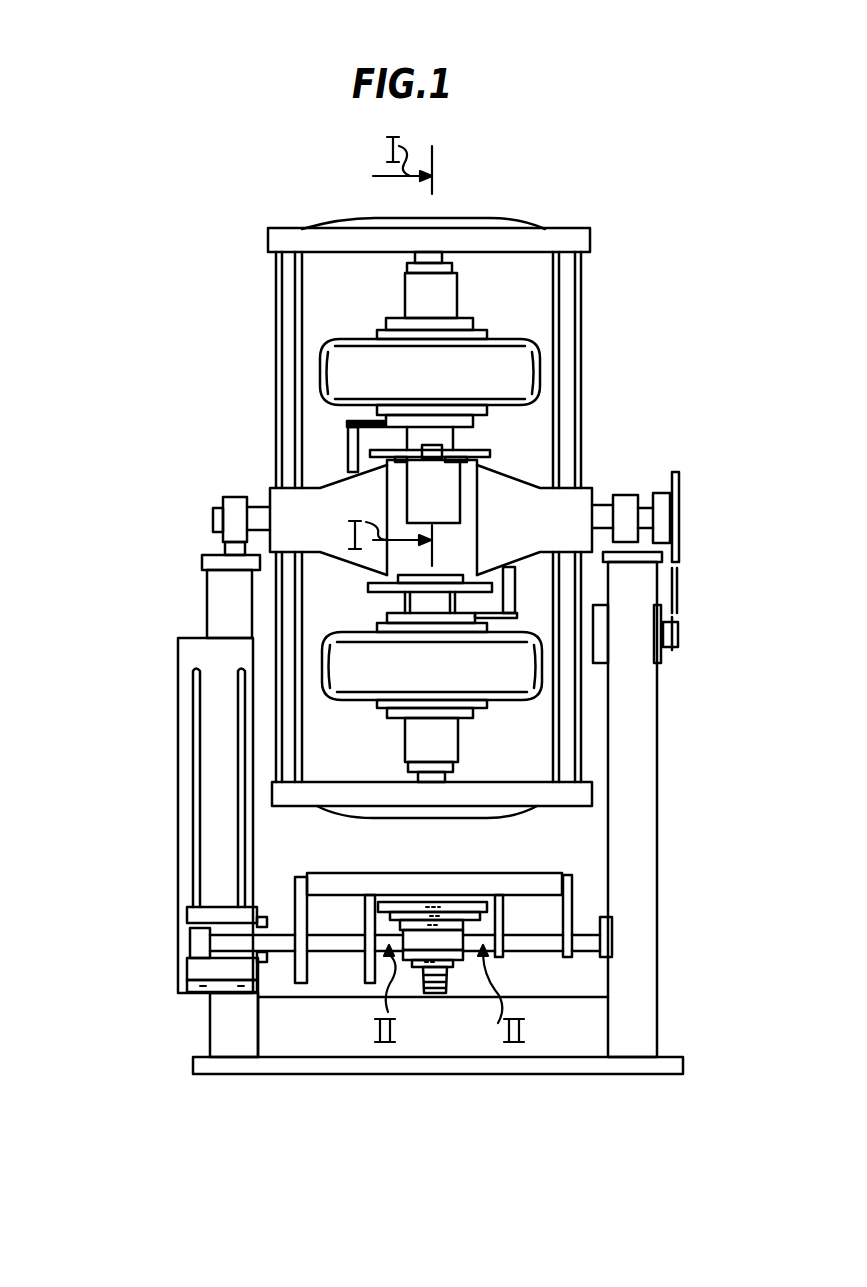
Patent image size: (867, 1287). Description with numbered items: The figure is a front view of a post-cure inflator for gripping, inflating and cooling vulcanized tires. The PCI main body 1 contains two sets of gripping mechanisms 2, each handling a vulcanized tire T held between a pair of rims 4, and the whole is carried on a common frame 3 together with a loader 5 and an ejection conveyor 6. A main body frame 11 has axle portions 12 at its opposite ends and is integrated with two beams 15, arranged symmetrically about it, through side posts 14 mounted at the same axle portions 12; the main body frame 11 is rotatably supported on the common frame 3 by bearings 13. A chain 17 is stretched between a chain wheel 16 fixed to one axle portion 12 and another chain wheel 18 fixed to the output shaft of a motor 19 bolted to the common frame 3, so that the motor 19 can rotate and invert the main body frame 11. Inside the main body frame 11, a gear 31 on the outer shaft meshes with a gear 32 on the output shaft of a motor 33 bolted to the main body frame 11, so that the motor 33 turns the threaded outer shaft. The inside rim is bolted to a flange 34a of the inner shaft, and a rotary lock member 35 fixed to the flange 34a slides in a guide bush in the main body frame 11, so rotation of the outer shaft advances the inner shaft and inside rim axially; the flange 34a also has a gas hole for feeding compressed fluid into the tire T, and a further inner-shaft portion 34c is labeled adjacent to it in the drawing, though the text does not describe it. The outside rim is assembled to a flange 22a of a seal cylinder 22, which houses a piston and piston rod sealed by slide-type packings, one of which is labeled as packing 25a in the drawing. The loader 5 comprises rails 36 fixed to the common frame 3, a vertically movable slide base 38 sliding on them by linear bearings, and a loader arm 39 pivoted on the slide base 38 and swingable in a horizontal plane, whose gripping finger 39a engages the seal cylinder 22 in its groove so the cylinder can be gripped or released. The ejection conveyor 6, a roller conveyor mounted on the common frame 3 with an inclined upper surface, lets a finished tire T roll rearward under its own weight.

The PCI main body 1 is at (257, 443).
The gripping mechanism 2 is at (382, 275).
The common frame 3 is at (660, 948).
The rim 4 is at (470, 398).
The loader 5 is at (177, 785).
The ejection conveyor 6 is at (513, 880).
The main body frame 11 is at (288, 530).
The axle portion 12 is at (213, 517).
The bearing 13 is at (232, 500).
The side post 14 is at (288, 612).
The beam 15 is at (290, 792).
The chain wheel 16 is at (677, 542).
The chain 17 is at (680, 597).
The chain wheel 18 is at (680, 638).
The motor 19 is at (657, 657).
The seal cylinder 22 is at (440, 293).
The flange 22a is at (462, 322).
The spindle shaft 25a is at (437, 260).
The gear 31 is at (407, 437).
The gear 32 is at (447, 445).
The motor 33 is at (448, 488).
The flange 34a is at (405, 420).
The rim flange 34c is at (375, 425).
The rotary lock member 35 is at (347, 442).
The rail 36 is at (197, 828).
The slide base 38 is at (193, 977).
The loader arm 39 is at (195, 942).
The gripping finger 39a is at (423, 942).
The vulcanized tire T is at (532, 372).